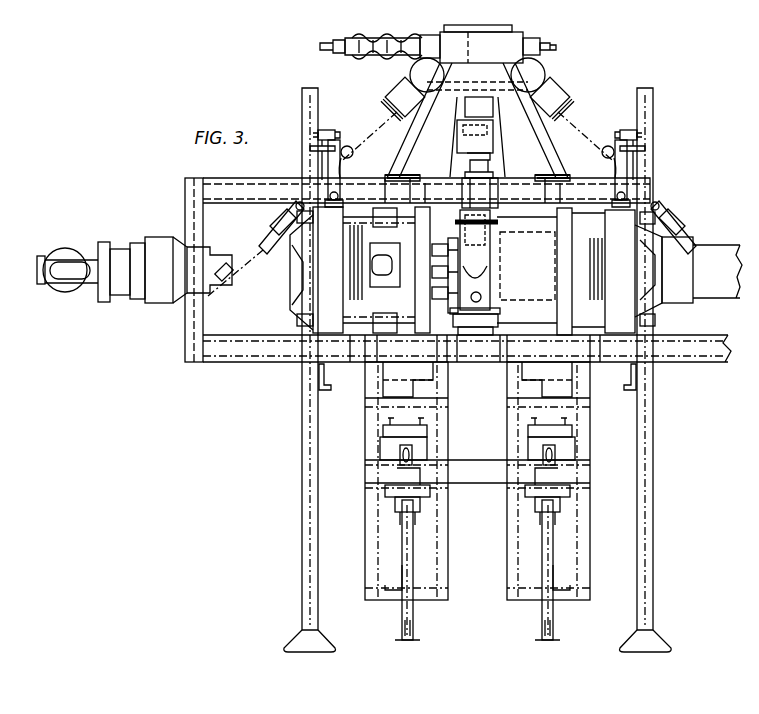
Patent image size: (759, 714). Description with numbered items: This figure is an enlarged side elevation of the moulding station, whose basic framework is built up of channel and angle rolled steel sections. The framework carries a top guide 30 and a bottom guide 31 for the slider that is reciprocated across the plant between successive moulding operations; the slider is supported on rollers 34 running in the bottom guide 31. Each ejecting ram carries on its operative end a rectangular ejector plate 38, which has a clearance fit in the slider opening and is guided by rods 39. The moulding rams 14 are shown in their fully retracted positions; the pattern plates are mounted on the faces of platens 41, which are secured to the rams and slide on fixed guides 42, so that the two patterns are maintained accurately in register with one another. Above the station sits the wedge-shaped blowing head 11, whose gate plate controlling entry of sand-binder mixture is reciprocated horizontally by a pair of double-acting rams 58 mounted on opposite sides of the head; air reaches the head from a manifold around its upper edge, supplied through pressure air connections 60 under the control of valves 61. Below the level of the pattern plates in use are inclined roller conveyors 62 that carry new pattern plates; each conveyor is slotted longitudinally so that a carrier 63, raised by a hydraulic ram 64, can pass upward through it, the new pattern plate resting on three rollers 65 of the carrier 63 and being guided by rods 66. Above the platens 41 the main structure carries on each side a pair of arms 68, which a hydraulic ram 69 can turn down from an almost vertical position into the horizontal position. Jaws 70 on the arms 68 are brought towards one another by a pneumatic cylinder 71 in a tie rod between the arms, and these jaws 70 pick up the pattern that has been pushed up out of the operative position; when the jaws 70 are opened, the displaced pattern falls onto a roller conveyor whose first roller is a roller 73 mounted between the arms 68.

The blowing head 11 is at (482, 153).
The moulding rams 14 is at (219, 247).
The top guide 30 is at (512, 193).
The bottom guide 31 is at (480, 331).
The rollers 34 is at (485, 310).
The ejector plate 38 is at (450, 262).
The rods 39 is at (387, 250).
The platens 41 is at (412, 250).
The fixed guides 42 is at (513, 220).
The double-acting rams 58 is at (460, 51).
The pressure air connections 60 is at (419, 77).
The valves 61 is at (394, 99).
The inclined roller conveyors 62 is at (417, 433).
The carrier 63 is at (541, 468).
The hydraulic ram 64 is at (413, 558).
The rollers 65 is at (543, 452).
The rods 66 is at (411, 617).
The arms 68 is at (327, 185).
The hydraulic ram 69 is at (265, 233).
The jaws 70 is at (332, 141).
The pneumatic cylinder 71 is at (343, 161).
The roller 73 is at (353, 152).